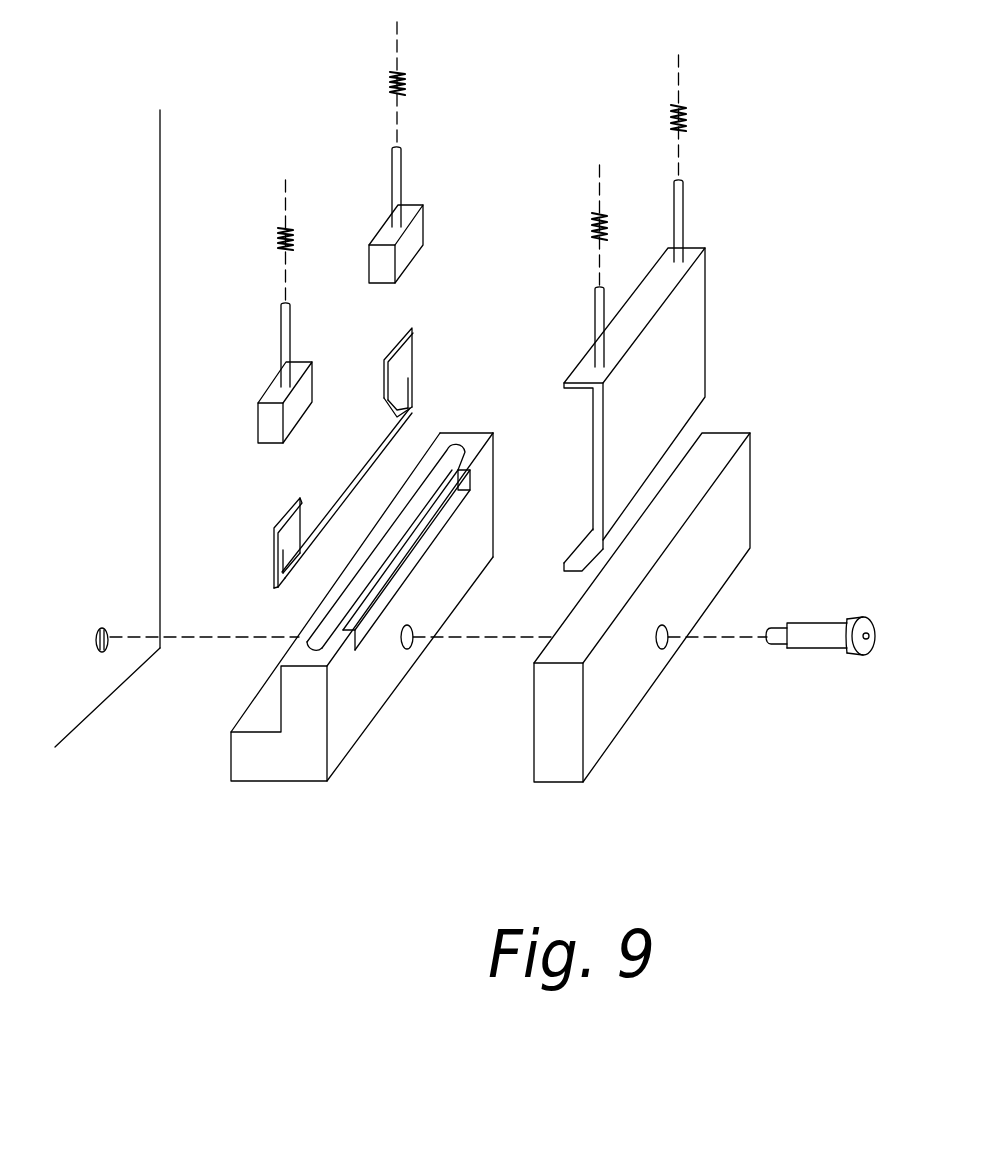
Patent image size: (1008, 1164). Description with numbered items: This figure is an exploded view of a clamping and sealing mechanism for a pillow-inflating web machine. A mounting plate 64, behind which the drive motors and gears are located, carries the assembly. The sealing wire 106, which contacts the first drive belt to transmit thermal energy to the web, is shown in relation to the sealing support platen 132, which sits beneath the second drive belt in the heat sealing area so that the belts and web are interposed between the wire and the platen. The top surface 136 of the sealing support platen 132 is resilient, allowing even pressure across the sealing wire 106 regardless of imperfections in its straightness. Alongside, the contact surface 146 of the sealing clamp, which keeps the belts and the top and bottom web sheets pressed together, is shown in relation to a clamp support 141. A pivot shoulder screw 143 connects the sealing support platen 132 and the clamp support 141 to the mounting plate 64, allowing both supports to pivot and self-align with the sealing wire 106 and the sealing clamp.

The mounting plate 64 is at (67, 717).
The sealing wire 106 is at (362, 473).
The sealing support platen 132 is at (263, 768).
The top surface 136 is at (457, 455).
The clamp support 141 is at (553, 773).
The pivot shoulder screw 143 is at (815, 630).
The clamp contact surface 146 is at (549, 581).